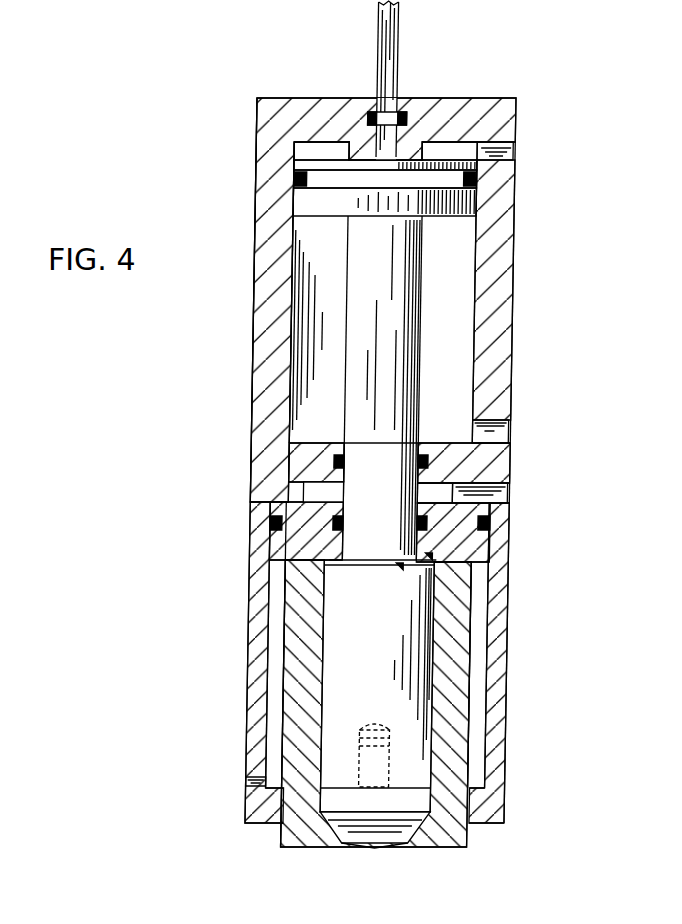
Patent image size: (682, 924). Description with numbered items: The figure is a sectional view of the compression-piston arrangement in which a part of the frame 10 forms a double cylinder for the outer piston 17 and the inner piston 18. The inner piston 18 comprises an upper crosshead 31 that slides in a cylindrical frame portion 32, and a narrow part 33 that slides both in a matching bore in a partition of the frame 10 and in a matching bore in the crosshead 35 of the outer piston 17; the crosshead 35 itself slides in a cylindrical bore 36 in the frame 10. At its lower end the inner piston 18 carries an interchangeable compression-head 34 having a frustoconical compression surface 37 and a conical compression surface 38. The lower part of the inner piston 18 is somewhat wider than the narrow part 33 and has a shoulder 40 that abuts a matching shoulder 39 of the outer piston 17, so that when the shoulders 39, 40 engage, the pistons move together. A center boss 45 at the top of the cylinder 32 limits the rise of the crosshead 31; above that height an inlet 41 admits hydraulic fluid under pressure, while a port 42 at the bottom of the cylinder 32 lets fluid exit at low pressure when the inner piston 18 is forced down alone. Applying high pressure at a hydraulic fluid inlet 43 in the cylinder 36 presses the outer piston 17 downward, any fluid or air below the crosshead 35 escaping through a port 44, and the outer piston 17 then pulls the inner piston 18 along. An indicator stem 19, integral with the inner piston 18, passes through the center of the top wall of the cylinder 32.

The frame 10 is at (517, 230).
The outer piston 17 is at (464, 622).
The inner piston 18 is at (411, 655).
The indicator stem 19 is at (389, 40).
The upper crosshead 31 is at (502, 202).
The cylindrical frame portion 32 is at (476, 283).
The narrow part 33 is at (412, 315).
The compression-head 34 is at (429, 798).
The crosshead 35 is at (287, 543).
The cylindrical bore 36 is at (278, 600).
The frustoconical compression surface 37 is at (325, 837).
The conical compression surface 38 is at (369, 842).
The shoulder 39 is at (437, 557).
The shoulder 40 is at (410, 567).
The inlet 41 is at (504, 152).
The port 42 is at (508, 432).
The hydraulic fluid inlet 43 is at (514, 490).
The port 44 is at (256, 782).
The center boss 45 is at (414, 147).